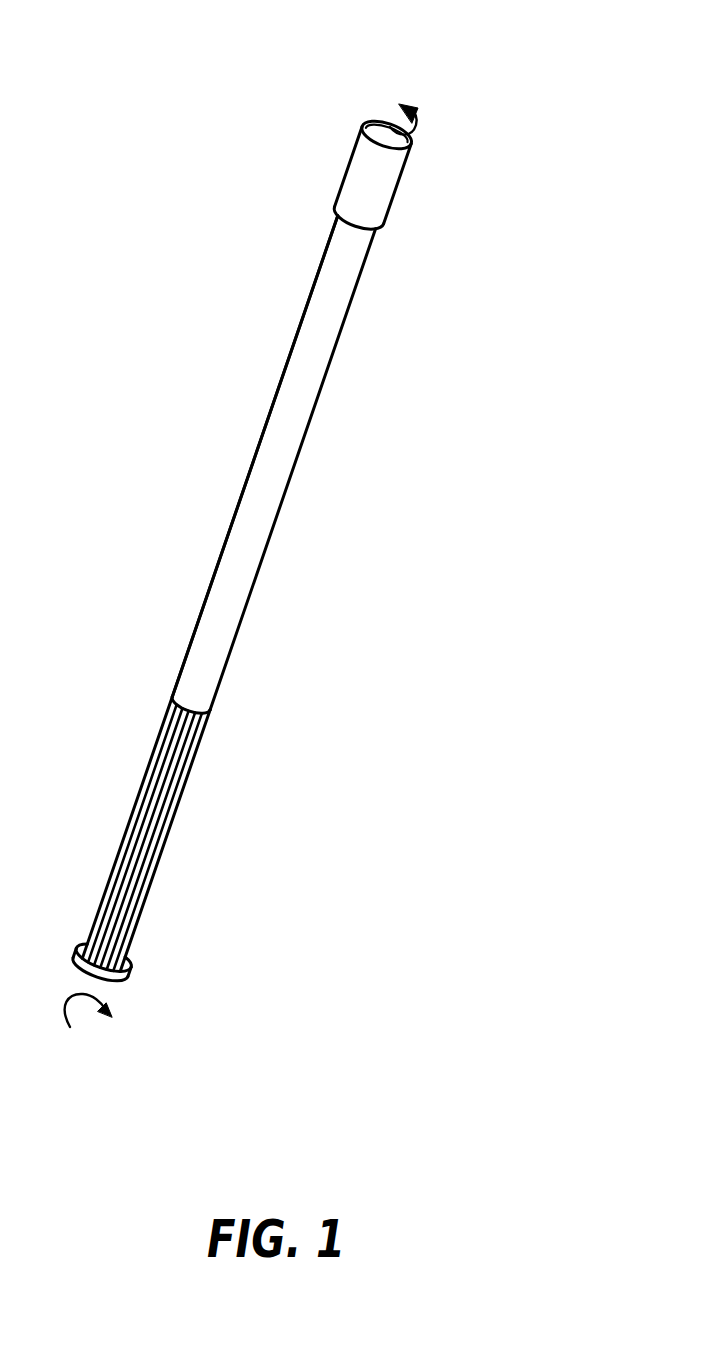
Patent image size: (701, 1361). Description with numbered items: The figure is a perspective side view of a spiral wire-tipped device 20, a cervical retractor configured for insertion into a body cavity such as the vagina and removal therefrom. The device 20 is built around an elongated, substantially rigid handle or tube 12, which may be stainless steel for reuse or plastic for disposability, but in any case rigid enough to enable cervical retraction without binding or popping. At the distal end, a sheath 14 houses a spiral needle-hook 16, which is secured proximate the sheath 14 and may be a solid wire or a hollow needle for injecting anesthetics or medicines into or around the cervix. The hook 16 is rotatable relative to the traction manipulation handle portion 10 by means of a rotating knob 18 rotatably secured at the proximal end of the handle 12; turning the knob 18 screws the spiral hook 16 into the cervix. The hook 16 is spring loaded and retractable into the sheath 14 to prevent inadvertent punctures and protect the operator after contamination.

The traction manipulation handle portion 10 is at (186, 782).
The handle or tube 12 is at (291, 475).
The sheath 14 is at (395, 190).
The spiral needle-hook 16 is at (420, 110).
The rotating knob 18 is at (134, 975).
The spiral wire-tipped device 20 is at (277, 392).